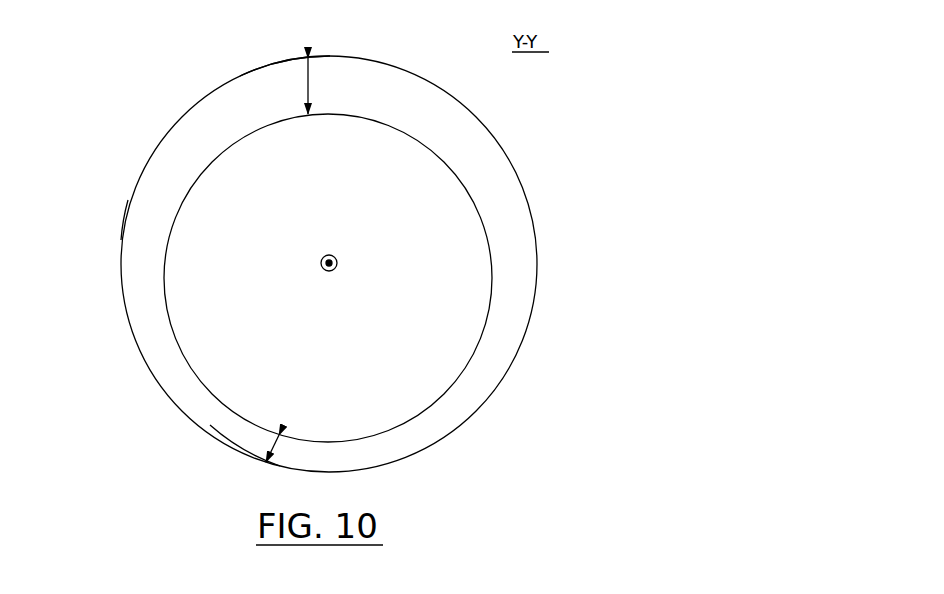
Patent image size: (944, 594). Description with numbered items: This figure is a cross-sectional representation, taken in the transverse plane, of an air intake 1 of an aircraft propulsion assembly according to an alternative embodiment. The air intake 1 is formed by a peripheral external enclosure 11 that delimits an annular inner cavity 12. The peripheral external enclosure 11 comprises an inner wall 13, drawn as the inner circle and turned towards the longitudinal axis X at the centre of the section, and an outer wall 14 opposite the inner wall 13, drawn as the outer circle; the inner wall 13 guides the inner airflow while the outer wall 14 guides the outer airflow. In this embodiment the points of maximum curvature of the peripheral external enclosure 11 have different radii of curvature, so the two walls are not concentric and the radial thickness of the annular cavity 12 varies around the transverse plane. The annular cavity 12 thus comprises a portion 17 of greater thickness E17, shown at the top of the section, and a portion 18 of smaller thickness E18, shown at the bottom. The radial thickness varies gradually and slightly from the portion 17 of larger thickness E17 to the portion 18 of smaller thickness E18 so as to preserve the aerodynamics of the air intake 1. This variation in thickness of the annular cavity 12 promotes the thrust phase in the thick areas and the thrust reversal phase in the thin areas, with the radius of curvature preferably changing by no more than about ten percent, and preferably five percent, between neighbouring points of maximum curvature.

The air intake 1 is at (138, 77).
The peripheral external enclosure 11 is at (120, 221).
The annular inner cavity 12 is at (163, 225).
The inner wall 13 is at (490, 232).
The outer wall 14 is at (518, 177).
The portion of greater thickness 17 is at (268, 60).
The portion of smaller thickness 18 is at (230, 454).
The greater thickness E17 is at (330, 86).
The smaller thickness E18 is at (294, 453).
The longitudinal axis X is at (336, 275).